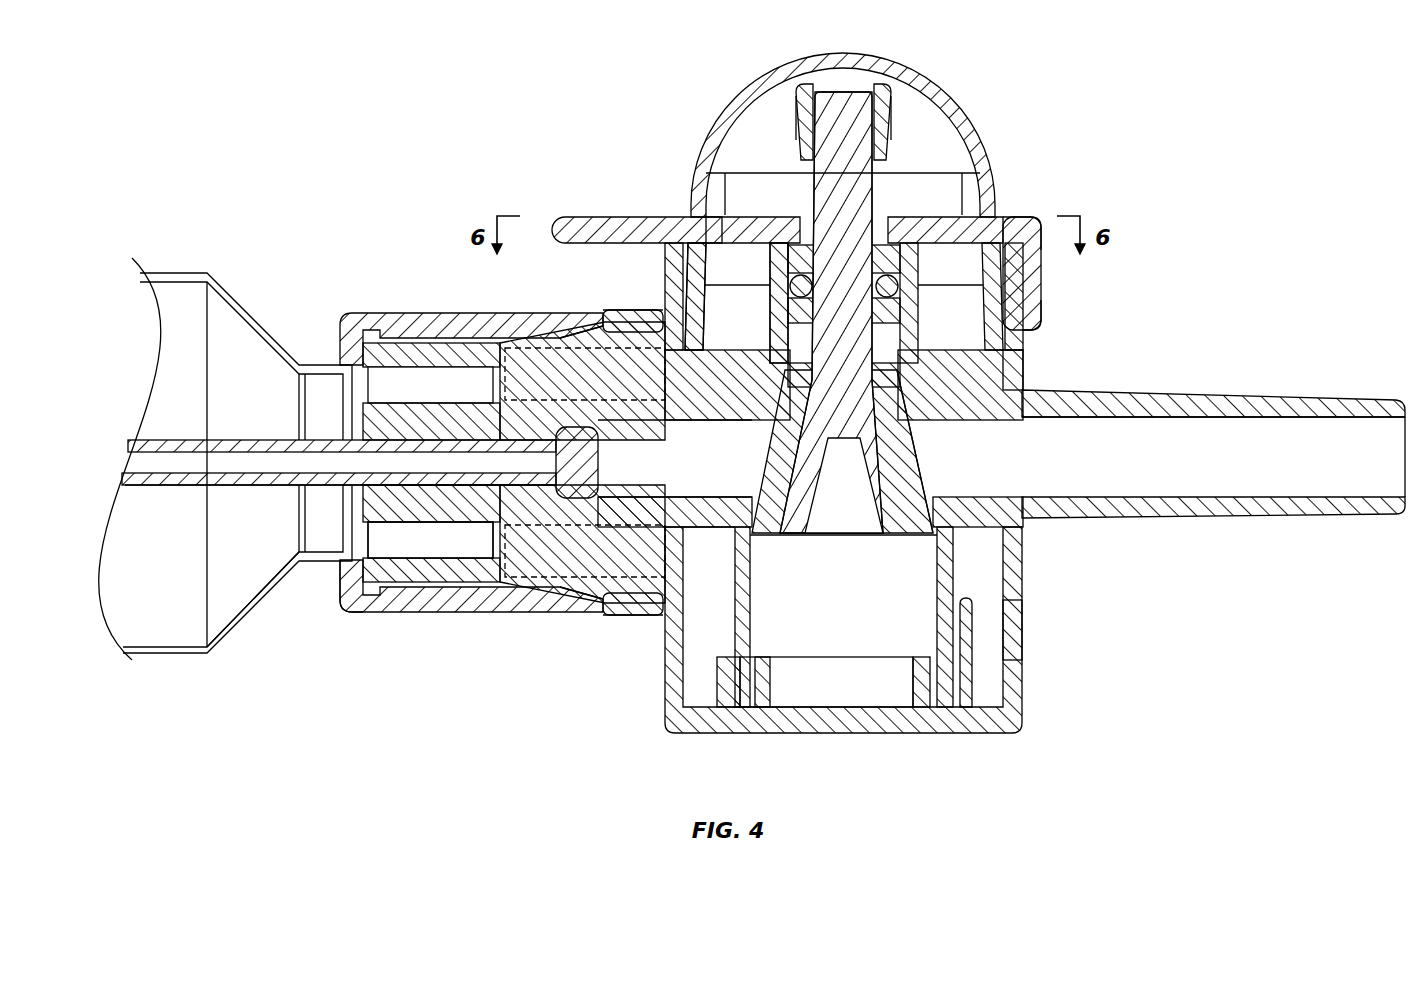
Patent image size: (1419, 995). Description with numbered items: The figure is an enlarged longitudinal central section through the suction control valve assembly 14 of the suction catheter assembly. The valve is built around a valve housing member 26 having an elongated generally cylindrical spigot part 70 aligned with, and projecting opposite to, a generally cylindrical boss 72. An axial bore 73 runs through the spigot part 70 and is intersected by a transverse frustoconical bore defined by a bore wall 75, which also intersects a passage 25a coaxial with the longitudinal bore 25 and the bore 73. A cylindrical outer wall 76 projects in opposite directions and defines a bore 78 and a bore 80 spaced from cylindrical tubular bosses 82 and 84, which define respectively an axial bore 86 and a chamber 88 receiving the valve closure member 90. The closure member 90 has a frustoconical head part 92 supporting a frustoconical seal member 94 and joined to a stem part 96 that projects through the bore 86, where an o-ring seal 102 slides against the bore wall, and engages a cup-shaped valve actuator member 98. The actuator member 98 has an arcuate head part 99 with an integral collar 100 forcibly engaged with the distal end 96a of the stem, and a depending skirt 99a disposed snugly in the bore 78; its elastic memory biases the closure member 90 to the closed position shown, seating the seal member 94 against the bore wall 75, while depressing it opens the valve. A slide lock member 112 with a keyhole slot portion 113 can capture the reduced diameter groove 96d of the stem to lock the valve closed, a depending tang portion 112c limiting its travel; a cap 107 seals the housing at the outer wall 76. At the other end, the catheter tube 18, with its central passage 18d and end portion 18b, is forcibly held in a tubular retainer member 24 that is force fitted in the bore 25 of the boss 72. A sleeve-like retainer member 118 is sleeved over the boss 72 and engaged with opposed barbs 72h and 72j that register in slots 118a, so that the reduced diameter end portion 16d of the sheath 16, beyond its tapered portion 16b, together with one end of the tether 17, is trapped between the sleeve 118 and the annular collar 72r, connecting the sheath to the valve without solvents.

The suction control valve assembly 14 is at (418, 310).
The sheath 16 is at (177, 655).
The tapered portion 16b is at (243, 607).
The sheath distal end portion 16d is at (313, 557).
The tether 17 is at (317, 377).
The suction catheter tube 18 is at (178, 440).
The catheter tube end portion 18b is at (477, 507).
The central passage 18d is at (142, 466).
The tubular retainer member 24 is at (410, 520).
The longitudinal bore 25 is at (578, 482).
The passage 25a is at (673, 497).
The valve housing member 26 is at (1025, 582).
The spigot part 70 is at (1270, 393).
The boss 72 is at (440, 557).
The barb 72h is at (627, 325).
The barb 72j is at (593, 617).
The collar 72r is at (368, 612).
The axial bore 73 is at (1205, 497).
The bore wall 75 is at (765, 527).
The outer wall 76 is at (1023, 357).
The bore 78 is at (1040, 305).
The bore 80 is at (683, 640).
The tubular boss 82 is at (738, 250).
The tubular boss 84 is at (750, 622).
The axial bore 86 is at (827, 232).
The chamber 88 is at (902, 583).
The valve closure member 90 is at (883, 207).
The head part 92 is at (888, 462).
The seal member 94 is at (927, 482).
The stem part 96 is at (790, 185).
The distal end 96a is at (843, 100).
The groove 96d is at (953, 163).
The valve actuator member 98 is at (943, 100).
The head part 99 is at (800, 80).
The skirt 99a is at (1037, 290).
The collar 100 is at (803, 137).
The o-ring seal 102 is at (985, 200).
The cap 107 is at (835, 735).
The slide lock member 112 is at (605, 212).
The tang portion 112c is at (1032, 327).
The keyhole slot portion 113 is at (707, 217).
The retainer member 118 is at (350, 610).
The slots 118a is at (558, 330).